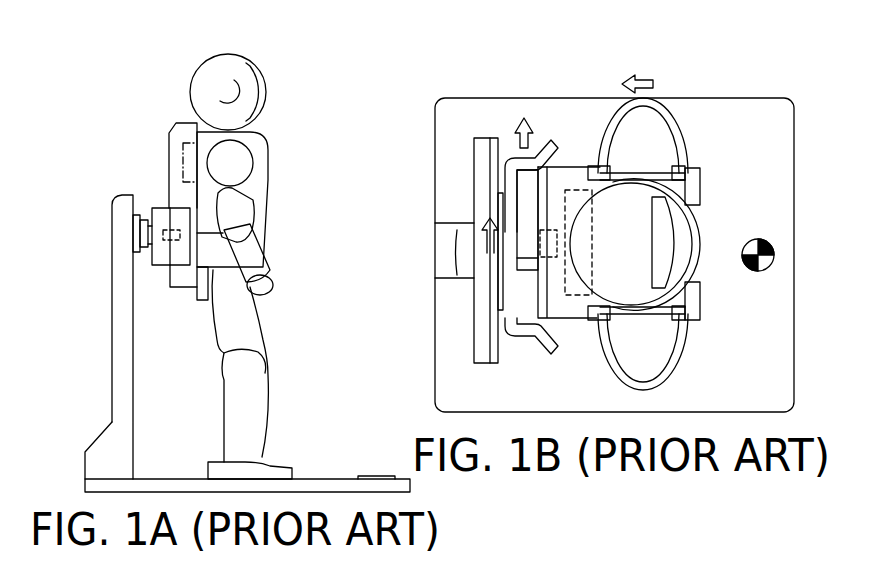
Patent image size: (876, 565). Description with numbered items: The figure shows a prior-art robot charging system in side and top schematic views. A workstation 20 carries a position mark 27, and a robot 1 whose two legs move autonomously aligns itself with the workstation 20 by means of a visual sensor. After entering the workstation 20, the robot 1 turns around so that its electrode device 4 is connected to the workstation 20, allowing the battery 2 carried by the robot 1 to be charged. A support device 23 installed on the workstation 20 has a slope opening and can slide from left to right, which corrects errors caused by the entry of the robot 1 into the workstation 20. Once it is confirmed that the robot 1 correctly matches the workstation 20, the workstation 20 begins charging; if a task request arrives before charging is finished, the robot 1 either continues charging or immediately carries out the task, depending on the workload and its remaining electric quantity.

In FIG. 1A, the robot 1 is at (278, 66).
In FIG. 1B, the robot 1 is at (680, 104).
In FIG. 1A, the battery 2 is at (192, 147).
In FIG. 1B, the battery 2 is at (577, 190).
In FIG. 1A, the electrode device 4 is at (172, 228).
In FIG. 1B, the electrode device 4 is at (553, 232).
In FIG. 1A, the workstation 20 is at (121, 172).
In FIG. 1B, the workstation 20 is at (500, 84).
In FIG. 1A, the support device 23 is at (150, 280).
In FIG. 1B, the support device 23 is at (485, 178).
In FIG. 1A, the position mark 27 is at (375, 476).
In FIG. 1B, the position mark 27 is at (757, 238).